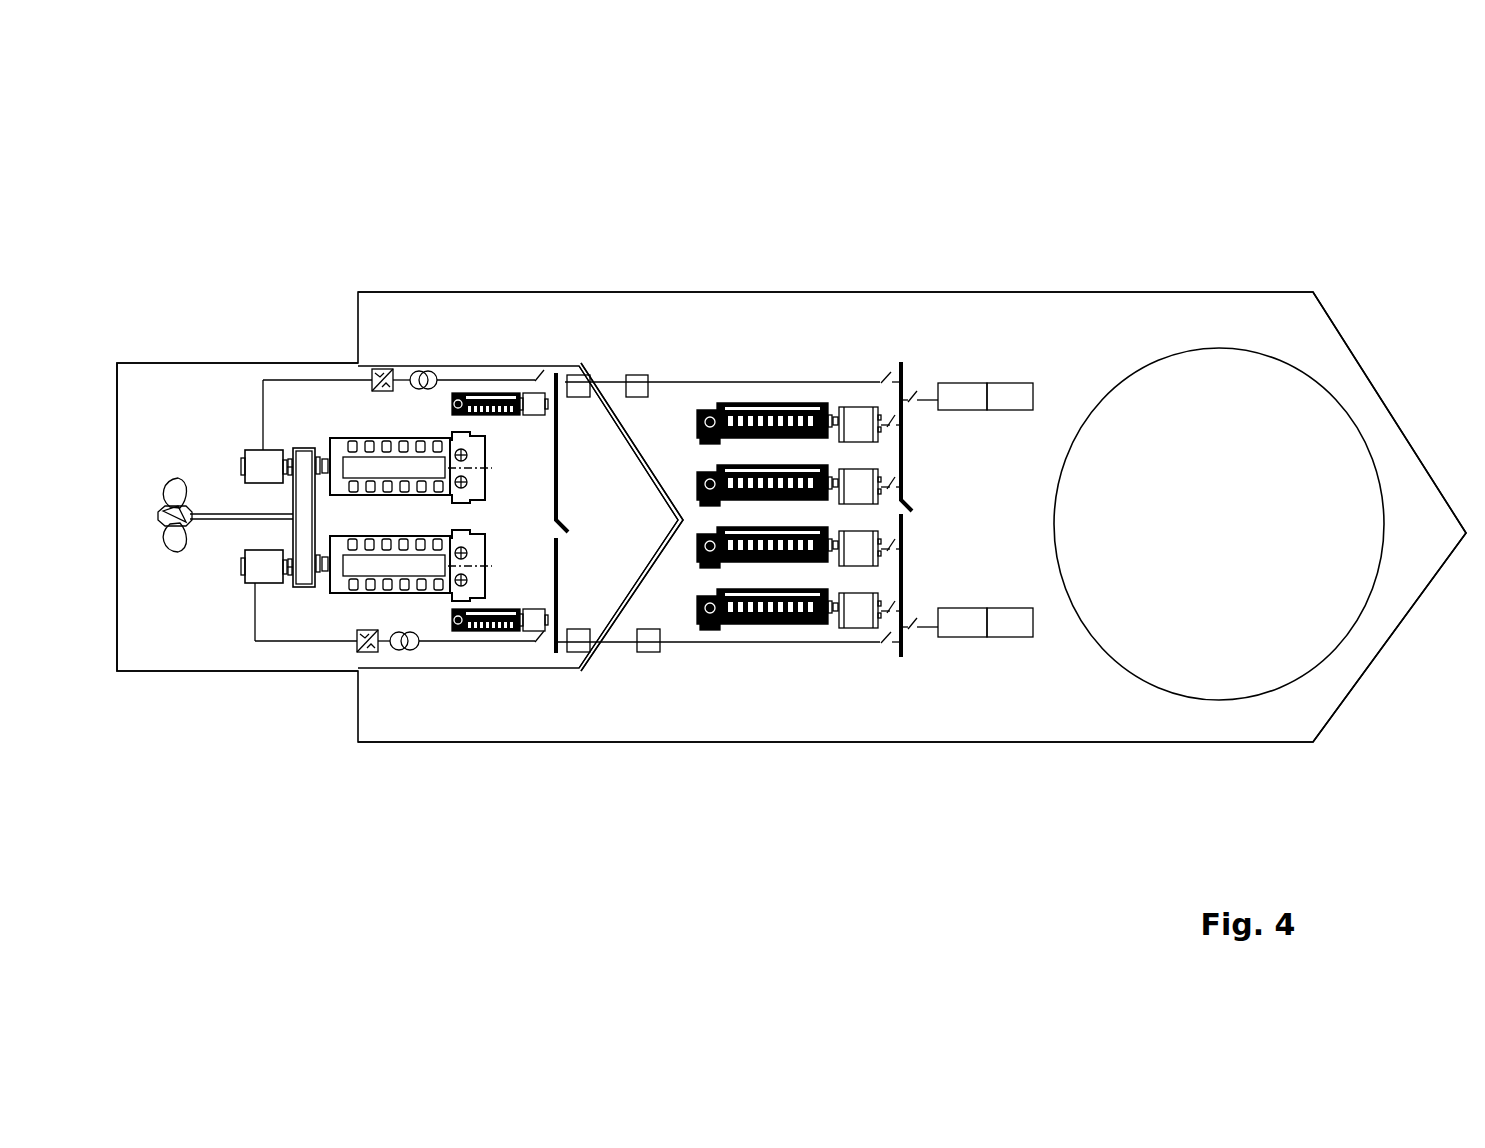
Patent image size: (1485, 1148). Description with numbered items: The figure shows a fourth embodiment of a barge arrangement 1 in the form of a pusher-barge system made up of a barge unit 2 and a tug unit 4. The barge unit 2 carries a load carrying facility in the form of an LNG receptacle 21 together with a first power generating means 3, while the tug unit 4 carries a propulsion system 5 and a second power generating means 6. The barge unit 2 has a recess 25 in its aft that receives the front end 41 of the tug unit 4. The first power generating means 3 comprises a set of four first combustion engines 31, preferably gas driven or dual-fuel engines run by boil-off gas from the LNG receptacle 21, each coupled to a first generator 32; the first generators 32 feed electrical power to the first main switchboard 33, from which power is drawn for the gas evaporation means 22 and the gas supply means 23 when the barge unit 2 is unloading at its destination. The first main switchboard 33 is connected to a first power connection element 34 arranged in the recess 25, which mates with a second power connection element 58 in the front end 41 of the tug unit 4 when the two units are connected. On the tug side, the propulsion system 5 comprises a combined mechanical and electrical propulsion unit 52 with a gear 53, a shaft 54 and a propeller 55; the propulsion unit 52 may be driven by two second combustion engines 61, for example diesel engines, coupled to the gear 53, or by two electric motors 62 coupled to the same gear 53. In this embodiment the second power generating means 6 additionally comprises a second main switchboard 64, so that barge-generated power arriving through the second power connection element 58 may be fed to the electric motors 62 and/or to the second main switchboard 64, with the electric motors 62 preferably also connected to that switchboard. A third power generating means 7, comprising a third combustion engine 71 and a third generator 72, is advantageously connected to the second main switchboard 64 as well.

The barge arrangement 1 is at (753, 233).
The barge unit 2 is at (1242, 305).
The first power generating means 3 is at (740, 377).
The tug unit 4 is at (140, 385).
The propulsion system 5 is at (195, 573).
The second power generating means 6 is at (400, 610).
The third power generating means 7 is at (493, 647).
The LNG receptacle 21 is at (1288, 456).
The gas evaporation means 22 is at (1012, 398).
The gas supply means 23 is at (958, 387).
The recess 25 is at (545, 363).
The first combustion engines 31 is at (739, 630).
The first generators 32 is at (840, 630).
The first main switchboard 33 is at (913, 540).
The first power connection element 34 is at (636, 375).
The front end 41 is at (671, 512).
The propulsion unit 52 is at (232, 537).
The gear 53 is at (300, 488).
The shaft 54 is at (220, 523).
The propeller 55 is at (178, 478).
The second power connection element 58 is at (580, 375).
The second combustion engines 61 is at (373, 725).
The electric motors 62 is at (266, 583).
The second main switchboard 64 is at (572, 557).
The third combustion engine 71 is at (473, 632).
The third generator 72 is at (542, 630).